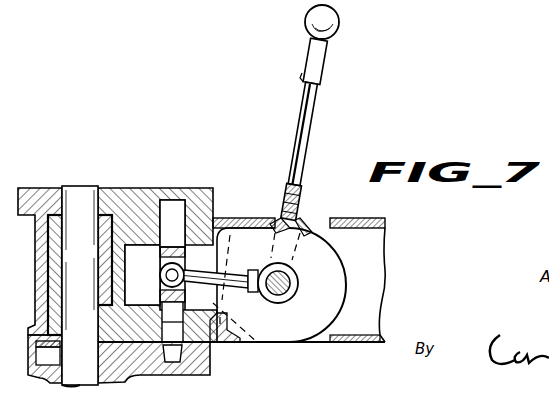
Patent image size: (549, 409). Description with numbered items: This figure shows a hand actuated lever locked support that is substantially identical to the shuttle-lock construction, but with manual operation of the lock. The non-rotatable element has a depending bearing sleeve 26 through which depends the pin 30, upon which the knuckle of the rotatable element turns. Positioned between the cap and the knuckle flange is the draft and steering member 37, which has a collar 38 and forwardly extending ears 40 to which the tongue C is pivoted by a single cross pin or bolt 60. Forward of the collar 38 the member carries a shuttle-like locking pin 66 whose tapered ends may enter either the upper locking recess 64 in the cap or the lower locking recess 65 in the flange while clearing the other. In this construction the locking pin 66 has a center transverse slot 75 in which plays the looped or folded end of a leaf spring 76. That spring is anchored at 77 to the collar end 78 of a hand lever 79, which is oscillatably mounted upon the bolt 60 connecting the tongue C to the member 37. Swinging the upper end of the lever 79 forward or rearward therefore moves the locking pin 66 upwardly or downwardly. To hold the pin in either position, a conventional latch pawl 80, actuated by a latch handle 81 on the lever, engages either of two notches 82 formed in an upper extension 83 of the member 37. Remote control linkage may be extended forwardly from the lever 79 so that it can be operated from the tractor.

The bearing sleeve 26 is at (56, 238).
The pin 30 is at (78, 193).
The draft and steering member 37 is at (30, 323).
The collar 38 is at (35, 274).
The ears 40 is at (280, 334).
The cross pin or bolt 60 is at (292, 277).
The upper locking recess 64 is at (196, 200).
The lower locking recess 65 is at (170, 354).
The locking pin 66 is at (171, 226).
The transverse slot 75 is at (159, 270).
The leaf spring 76 is at (220, 270).
The anchor 77 is at (245, 294).
The collar end 78 is at (298, 293).
The hand lever 79 is at (315, 136).
The latch pawl 80 is at (302, 201).
The latch handle 81 is at (327, 61).
The notches 82 is at (277, 230).
The upper extension 83 is at (245, 217).
The tongue C is at (376, 218).